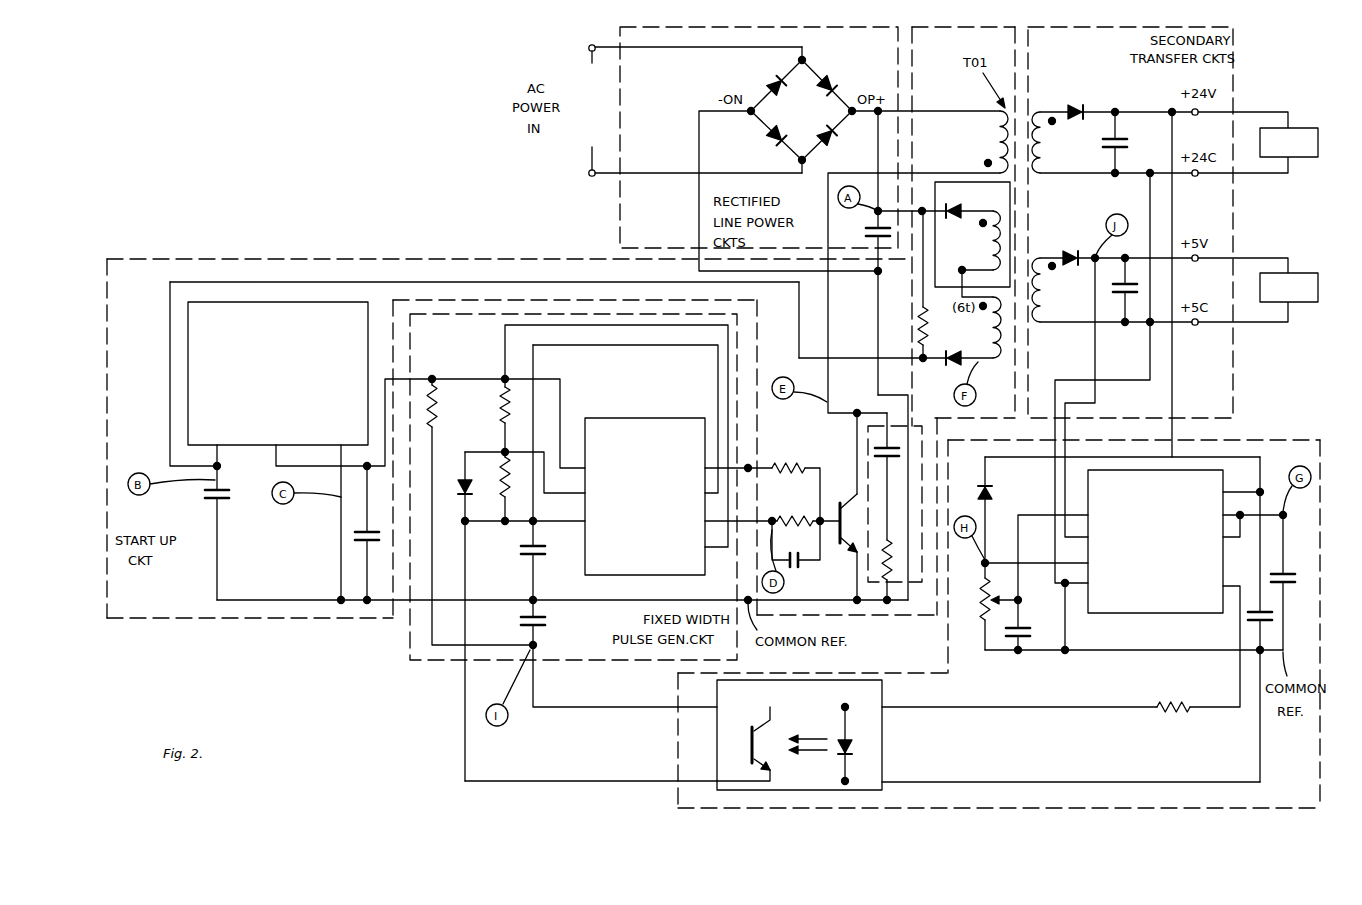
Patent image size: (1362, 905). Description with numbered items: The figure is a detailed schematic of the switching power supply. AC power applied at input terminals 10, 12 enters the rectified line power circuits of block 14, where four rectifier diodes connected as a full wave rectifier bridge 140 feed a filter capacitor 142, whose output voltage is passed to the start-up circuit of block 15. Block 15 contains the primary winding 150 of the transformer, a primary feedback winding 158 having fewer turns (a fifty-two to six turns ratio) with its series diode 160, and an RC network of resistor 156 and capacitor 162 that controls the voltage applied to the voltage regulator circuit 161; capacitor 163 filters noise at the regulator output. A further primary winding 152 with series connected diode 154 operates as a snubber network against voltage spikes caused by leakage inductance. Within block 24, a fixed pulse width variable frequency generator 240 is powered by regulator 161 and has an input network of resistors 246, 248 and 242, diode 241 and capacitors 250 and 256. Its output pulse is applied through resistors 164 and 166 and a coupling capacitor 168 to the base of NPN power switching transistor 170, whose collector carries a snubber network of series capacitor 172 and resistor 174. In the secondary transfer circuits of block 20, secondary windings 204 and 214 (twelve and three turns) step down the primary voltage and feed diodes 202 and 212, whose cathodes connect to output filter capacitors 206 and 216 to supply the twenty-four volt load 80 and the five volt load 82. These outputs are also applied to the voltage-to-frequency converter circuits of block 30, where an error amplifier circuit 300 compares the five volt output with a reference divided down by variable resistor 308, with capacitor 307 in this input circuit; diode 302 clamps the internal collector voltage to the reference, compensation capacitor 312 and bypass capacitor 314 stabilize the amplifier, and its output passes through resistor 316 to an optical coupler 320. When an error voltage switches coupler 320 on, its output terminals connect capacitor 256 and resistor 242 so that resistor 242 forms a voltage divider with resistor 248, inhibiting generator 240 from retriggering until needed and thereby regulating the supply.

The AC power input terminal 10 is at (693, 64).
The AC power input terminal 12 is at (692, 151).
The rectified line power circuits block 14 is at (874, 57).
The full wave rectifier bridge 140 is at (818, 122).
The filter capacitor 142 is at (866, 231).
The start-up circuit 15 is at (156, 603).
The primary winding 150 is at (998, 133).
The primary winding 152 is at (990, 248).
The diode 154 is at (958, 207).
The resistor 156 is at (918, 325).
The primary feedback winding 158 is at (937, 284).
The diode 160 is at (965, 348).
The voltage regulator circuit 161 is at (270, 302).
The capacitor 162 is at (221, 500).
The capacitor 163 is at (362, 541).
The resistor 164 is at (785, 464).
The resistor 166 is at (790, 518).
The coupling capacitor 168 is at (802, 557).
The power switching transistor 170 is at (841, 503).
The capacitor 172 is at (878, 450).
The resistor 174 is at (882, 552).
The secondary transfer circuits 20 is at (1053, 56).
The diode 202 is at (1076, 104).
The secondary winding 204 is at (1042, 157).
The output filter capacitor 206 is at (1126, 145).
The diode 212 is at (1070, 250).
The secondary winding 214 is at (1042, 304).
The output filter capacitor 216 is at (1118, 290).
The pulse generator circuit block 24 is at (439, 341).
The fixed pulse width variable frequency generator 240 is at (640, 418).
The diode 241 is at (464, 478).
The resistor 242 is at (437, 420).
The resistor 246 is at (503, 395).
The resistor 248 is at (500, 503).
The capacitor 250 is at (525, 556).
The decoupling capacitor 256 is at (542, 624).
The voltage to frequency converter circuits block 30 is at (1206, 806).
The error amplifier circuit 300 is at (1147, 613).
The diode 302 is at (992, 495).
The capacitor 307 is at (1028, 630).
The variable resistor 308 is at (984, 604).
The compensation capacitor 312 is at (1248, 618).
The bypass capacitor 314 is at (1288, 584).
The resistor 316 is at (1162, 700).
The optical coupler circuit 320 is at (882, 745).
The load 80 is at (1302, 128).
The load 82 is at (1302, 273).